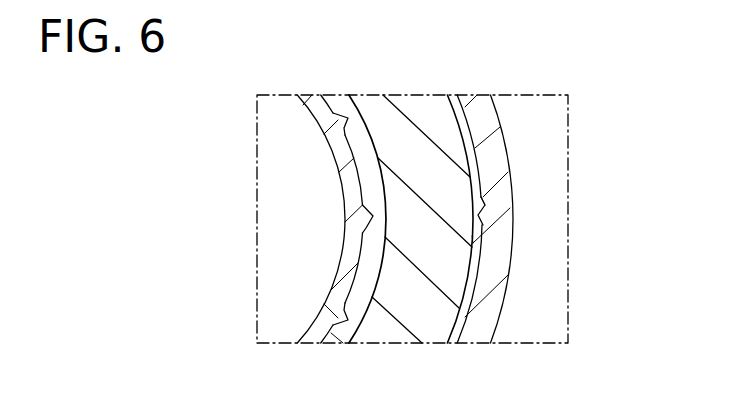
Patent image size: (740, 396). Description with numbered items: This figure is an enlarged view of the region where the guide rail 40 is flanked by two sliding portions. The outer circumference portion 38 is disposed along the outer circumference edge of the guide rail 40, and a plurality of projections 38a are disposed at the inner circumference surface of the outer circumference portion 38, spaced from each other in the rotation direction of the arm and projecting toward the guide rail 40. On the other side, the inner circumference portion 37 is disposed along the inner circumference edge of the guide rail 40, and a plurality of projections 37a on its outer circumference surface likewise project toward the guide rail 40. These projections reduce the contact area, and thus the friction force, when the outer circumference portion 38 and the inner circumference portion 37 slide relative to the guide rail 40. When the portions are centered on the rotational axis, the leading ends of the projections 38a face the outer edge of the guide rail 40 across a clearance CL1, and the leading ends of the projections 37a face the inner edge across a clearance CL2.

The inner circumference portion 37 is at (333, 292).
The projections 37a is at (372, 217).
The outer circumference portion 38 is at (493, 158).
The projections 38a is at (481, 222).
The guide rail 40 is at (437, 118).
The clearance CL1 is at (483, 198).
The clearance CL2 is at (472, 236).